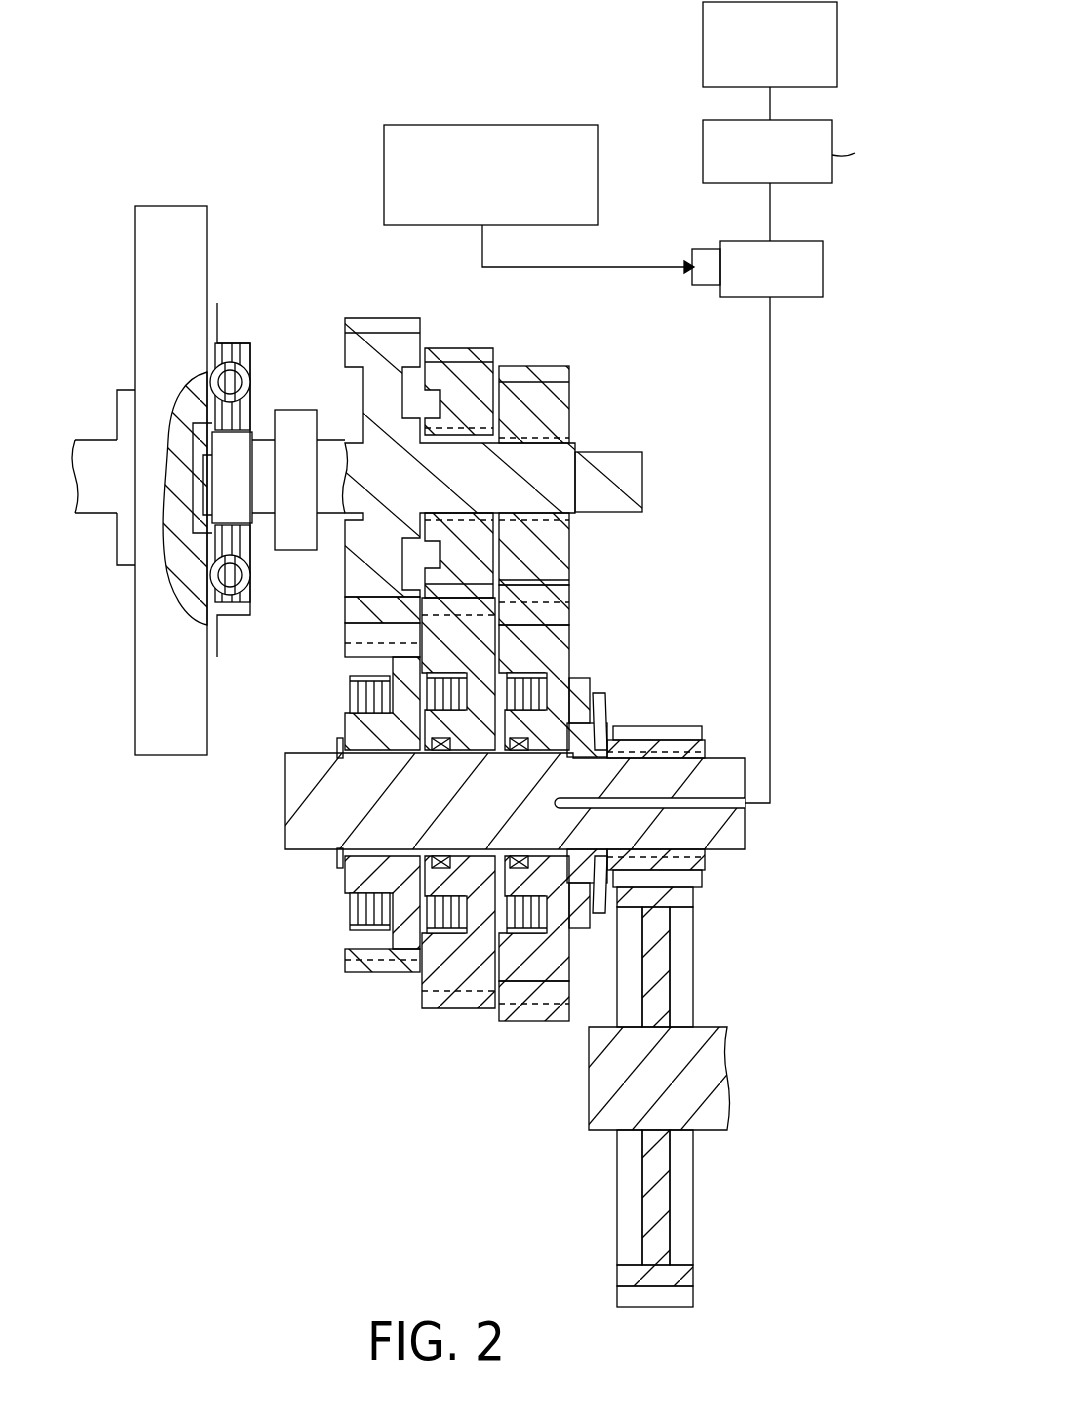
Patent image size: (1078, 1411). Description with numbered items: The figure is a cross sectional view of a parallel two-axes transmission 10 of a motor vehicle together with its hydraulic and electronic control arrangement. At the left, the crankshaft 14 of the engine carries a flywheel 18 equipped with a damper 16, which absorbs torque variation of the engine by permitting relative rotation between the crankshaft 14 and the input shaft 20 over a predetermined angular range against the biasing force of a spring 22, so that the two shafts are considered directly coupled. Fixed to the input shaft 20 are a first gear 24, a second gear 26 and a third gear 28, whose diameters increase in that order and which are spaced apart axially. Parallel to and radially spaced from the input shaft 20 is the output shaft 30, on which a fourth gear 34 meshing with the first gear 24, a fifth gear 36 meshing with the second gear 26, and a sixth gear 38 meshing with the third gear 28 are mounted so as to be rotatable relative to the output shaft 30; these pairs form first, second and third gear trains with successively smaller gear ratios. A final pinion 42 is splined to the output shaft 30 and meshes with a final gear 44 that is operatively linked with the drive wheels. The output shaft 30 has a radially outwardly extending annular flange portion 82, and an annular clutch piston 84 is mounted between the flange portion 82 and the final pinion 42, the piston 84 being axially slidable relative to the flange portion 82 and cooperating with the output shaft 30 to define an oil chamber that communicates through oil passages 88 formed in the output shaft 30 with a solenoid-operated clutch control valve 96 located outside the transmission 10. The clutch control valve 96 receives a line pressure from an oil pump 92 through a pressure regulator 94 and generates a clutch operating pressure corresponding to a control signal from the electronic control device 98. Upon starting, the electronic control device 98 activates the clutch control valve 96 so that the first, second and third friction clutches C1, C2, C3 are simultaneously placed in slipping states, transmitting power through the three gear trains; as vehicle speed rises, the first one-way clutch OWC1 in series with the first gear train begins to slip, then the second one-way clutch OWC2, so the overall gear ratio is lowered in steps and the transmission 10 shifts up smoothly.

The transmission 10 is at (630, 374).
The crankshaft 14 is at (78, 440).
The damper 16 is at (230, 322).
The flywheel 18 is at (143, 686).
The input shaft 20 is at (625, 452).
The spring 22 is at (250, 365).
The first gear 24 is at (555, 366).
The second gear 26 is at (470, 348).
The third gear 28 is at (405, 318).
The output shaft 30 is at (285, 795).
The fourth gear 34 is at (578, 600).
The fifth gear 36 is at (570, 626).
The sixth gear 38 is at (350, 658).
The final pinion 42 is at (698, 726).
The final gear 44 is at (622, 1278).
The flange portion 82 is at (602, 705).
The clutch piston 84 is at (582, 683).
The oil passages 88 is at (618, 812).
The oil pump 92 is at (288, 412).
The pressure regulator 94 is at (703, 133).
The clutch control valve 96 is at (818, 297).
The electronic control device 98 is at (388, 170).
The first friction clutch C1 is at (595, 656).
The second friction clutch C2 is at (433, 640).
The third friction clutch C3 is at (330, 704).
The first one-way clutch OWC1 is at (545, 757).
The second one-way clutch OWC2 is at (440, 757).